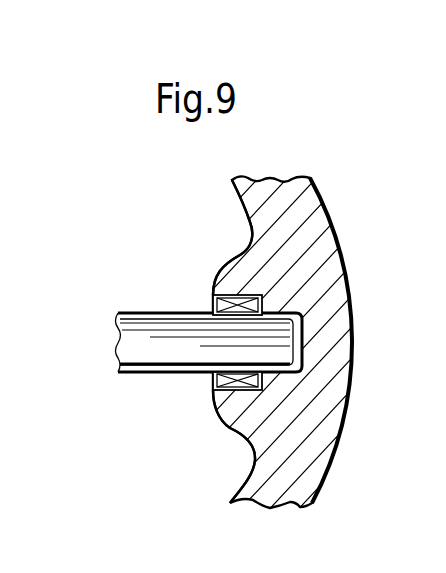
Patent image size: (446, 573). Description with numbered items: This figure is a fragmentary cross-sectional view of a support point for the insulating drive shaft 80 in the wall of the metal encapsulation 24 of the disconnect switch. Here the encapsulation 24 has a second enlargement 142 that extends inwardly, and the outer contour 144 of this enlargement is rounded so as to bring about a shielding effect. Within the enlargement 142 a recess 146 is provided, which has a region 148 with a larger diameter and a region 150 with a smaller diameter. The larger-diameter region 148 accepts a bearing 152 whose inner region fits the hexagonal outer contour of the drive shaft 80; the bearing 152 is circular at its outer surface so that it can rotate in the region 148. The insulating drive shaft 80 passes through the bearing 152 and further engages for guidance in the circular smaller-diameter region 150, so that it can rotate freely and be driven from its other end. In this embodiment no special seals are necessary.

The metal encapsulation 24 is at (283, 185).
The drive shaft 80 is at (142, 349).
The second enlargement 142 is at (255, 260).
The outer contour 144 is at (215, 272).
The recess 146 is at (228, 425).
The region with larger diameter 148 is at (216, 388).
The region with smaller diameter 150 is at (300, 371).
The bearing 152 is at (213, 300).